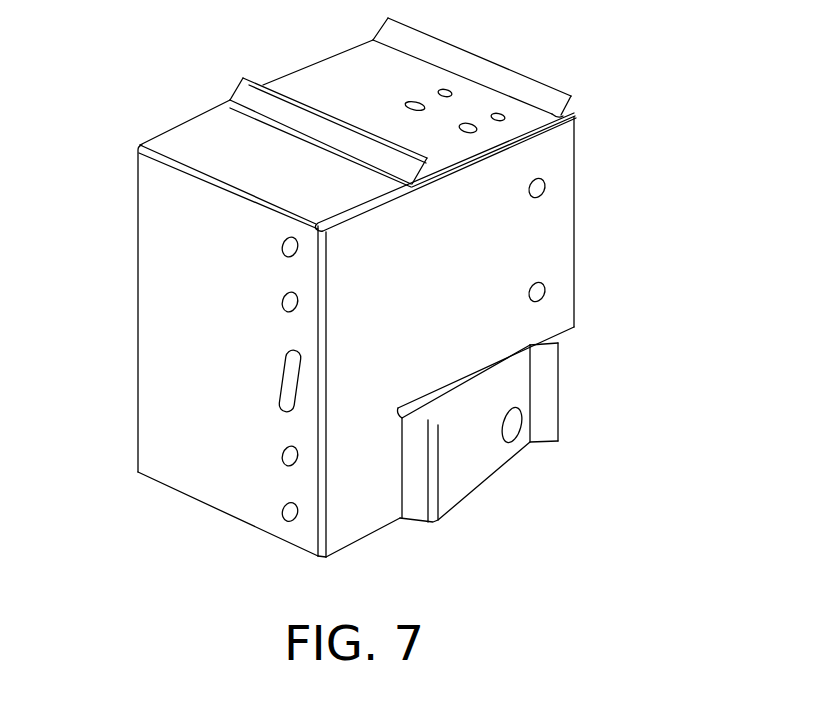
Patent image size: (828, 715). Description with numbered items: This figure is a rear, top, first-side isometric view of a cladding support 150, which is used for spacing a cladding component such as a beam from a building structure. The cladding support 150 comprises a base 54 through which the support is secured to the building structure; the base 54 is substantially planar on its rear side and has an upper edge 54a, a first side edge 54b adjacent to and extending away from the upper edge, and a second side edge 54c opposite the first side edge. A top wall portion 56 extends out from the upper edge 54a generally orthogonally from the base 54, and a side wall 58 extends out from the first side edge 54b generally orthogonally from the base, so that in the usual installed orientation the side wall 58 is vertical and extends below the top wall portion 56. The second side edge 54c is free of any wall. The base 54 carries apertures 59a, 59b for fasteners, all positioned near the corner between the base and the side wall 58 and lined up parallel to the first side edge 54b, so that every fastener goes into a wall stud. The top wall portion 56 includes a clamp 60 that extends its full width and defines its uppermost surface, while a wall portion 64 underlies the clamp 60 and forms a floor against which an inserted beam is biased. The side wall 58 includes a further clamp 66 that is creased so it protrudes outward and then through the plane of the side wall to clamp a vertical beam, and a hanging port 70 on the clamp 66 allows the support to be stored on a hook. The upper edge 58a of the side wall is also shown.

The cladding support 150 is at (734, 211).
The base 54 is at (185, 344).
The upper edge 54a is at (187, 162).
The first side edge 54b is at (320, 527).
The second side edge 54c is at (148, 422).
The top wall portion 56 is at (219, 127).
The side wall 58 is at (499, 327).
The top edge of second side panel 58a is at (574, 113).
The aperture 59a is at (283, 383).
The aperture 59b is at (282, 510).
The clamp 60 is at (358, 58).
The wall portion 64 is at (566, 112).
The clamp 66 is at (507, 437).
The hanging port 70 is at (513, 427).